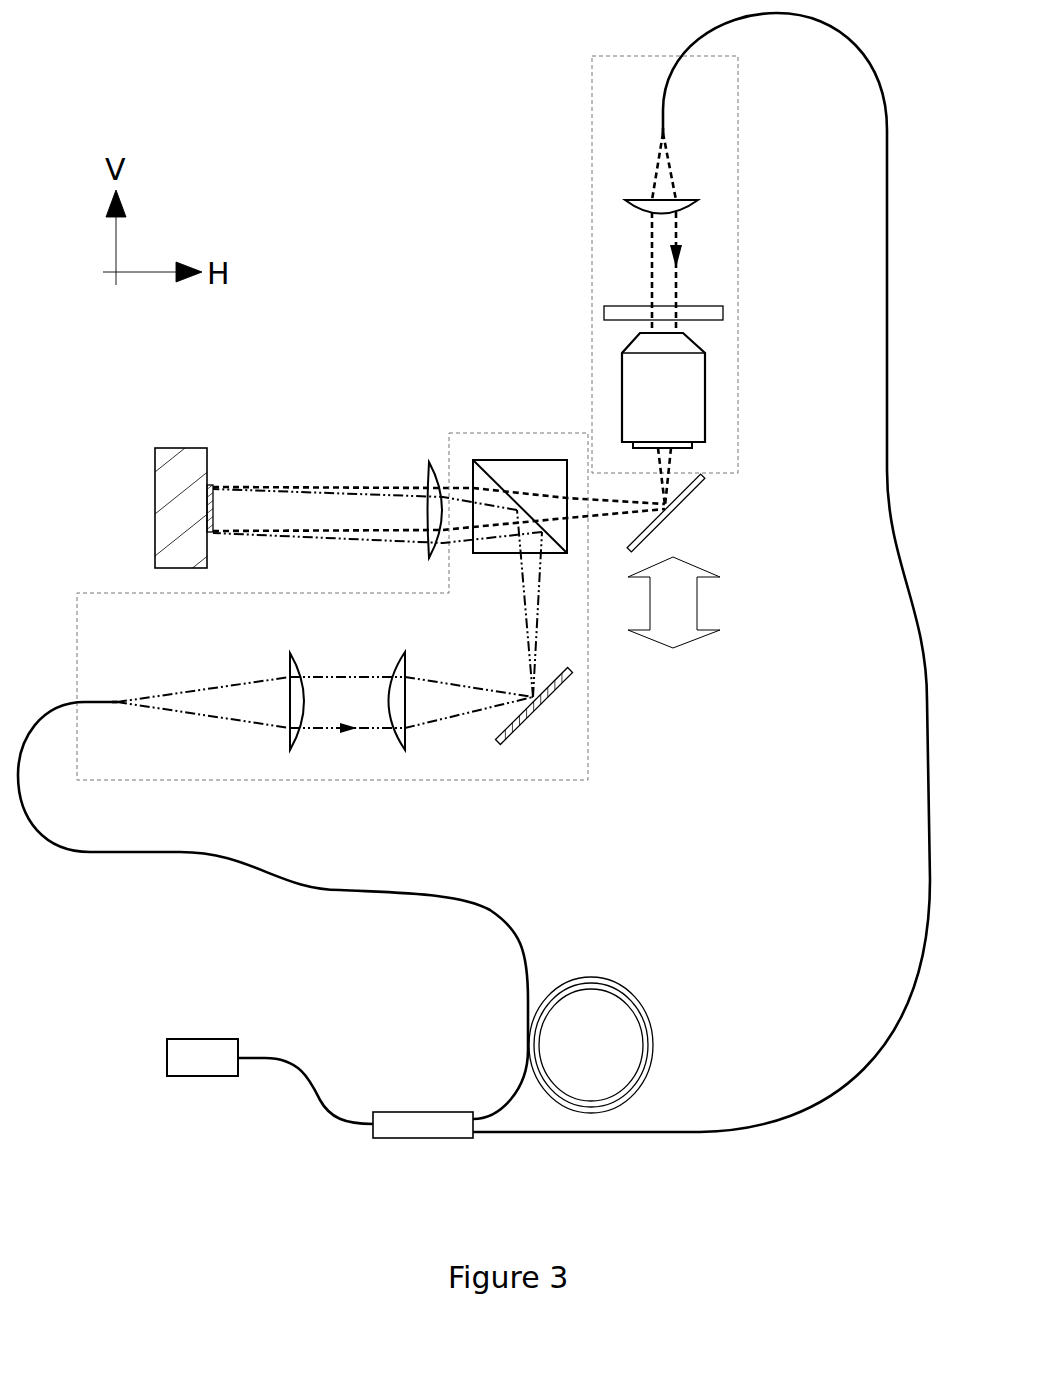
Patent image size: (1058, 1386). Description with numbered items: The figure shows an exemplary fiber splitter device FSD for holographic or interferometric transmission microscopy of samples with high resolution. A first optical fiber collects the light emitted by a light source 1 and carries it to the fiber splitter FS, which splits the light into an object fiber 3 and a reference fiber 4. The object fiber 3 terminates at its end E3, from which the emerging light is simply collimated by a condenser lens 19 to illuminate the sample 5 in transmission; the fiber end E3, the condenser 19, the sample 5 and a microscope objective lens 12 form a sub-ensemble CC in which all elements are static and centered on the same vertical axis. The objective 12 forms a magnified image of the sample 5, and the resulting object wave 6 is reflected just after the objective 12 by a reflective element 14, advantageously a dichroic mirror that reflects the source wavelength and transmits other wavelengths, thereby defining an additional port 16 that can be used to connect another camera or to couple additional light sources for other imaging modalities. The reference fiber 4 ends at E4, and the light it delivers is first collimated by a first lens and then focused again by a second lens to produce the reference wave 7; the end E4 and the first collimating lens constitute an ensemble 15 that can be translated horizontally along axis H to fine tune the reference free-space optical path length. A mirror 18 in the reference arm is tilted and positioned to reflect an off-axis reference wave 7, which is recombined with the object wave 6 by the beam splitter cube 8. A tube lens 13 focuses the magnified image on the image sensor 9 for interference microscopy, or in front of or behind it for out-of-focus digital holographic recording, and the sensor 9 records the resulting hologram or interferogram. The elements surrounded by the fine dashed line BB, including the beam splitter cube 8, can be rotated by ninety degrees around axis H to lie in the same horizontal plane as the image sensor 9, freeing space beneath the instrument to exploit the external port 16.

The light source 1 is at (203, 1050).
The object fiber 3 is at (808, 18).
The reference fiber 4 is at (357, 890).
The sample 5 is at (723, 305).
The object wave 6 is at (670, 470).
The reference wave 7 is at (525, 670).
The beam splitter cube 8 is at (523, 460).
The image sensor 9 is at (215, 487).
The microscope objective lens 12 is at (690, 408).
The tube lens 13 is at (433, 477).
The reflective element 14 is at (682, 500).
The ensemble 15 is at (115, 660).
The additional port 16 is at (682, 630).
The mirror 18 is at (550, 700).
The condenser lens 19 is at (628, 201).
The end of the object fiber E3 is at (660, 130).
The end of the reference fiber E4 is at (117, 707).
The sub-ensemble CC is at (592, 283).
The reference arm elements BB is at (525, 780).
The fiber splitter FS is at (415, 1112).
The fiber splitter device FSD is at (290, 1120).